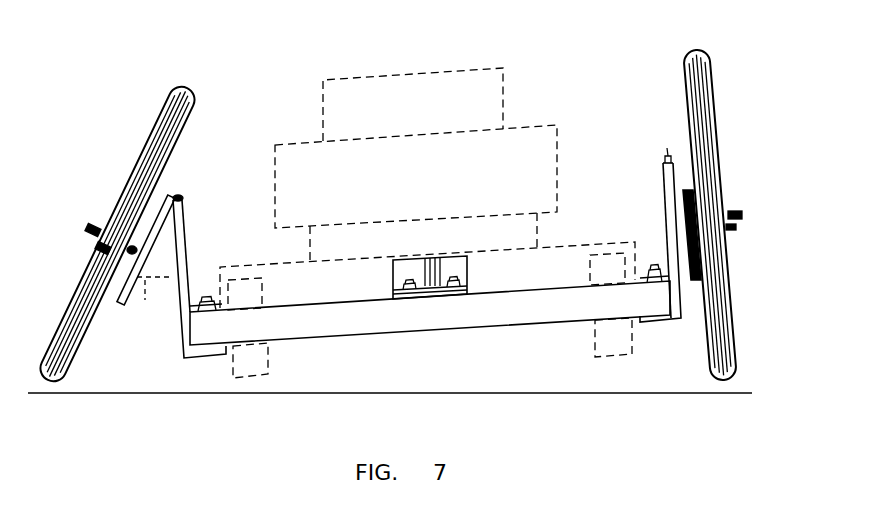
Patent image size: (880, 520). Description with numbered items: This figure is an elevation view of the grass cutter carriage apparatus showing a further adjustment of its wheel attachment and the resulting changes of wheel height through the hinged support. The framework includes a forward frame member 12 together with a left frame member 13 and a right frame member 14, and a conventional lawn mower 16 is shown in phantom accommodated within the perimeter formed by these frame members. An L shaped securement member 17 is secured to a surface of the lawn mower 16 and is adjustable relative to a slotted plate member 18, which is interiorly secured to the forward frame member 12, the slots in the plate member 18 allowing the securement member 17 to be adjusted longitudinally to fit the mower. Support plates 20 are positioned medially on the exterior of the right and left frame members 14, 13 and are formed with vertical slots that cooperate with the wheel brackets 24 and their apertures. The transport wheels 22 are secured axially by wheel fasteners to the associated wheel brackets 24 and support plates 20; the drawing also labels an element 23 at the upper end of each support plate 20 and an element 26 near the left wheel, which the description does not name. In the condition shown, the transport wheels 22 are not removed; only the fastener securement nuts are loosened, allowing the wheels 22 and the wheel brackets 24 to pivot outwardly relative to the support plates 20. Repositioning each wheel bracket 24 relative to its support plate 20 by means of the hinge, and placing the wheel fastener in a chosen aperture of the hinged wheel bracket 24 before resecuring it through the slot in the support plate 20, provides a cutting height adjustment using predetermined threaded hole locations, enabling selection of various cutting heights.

The forward frame member 12 is at (508, 316).
The left frame member 13 is at (668, 266).
The right frame member 14 is at (195, 300).
The lawn mower 16 is at (507, 112).
The L shaped securement member 17 is at (468, 272).
The slotted plate member 18 is at (468, 292).
The support plate 20 is at (182, 243).
The transport wheel 22 is at (200, 102).
The pivot cap 23 is at (183, 197).
The wheel bracket 24 is at (137, 252).
The phantom line 26 is at (148, 306).